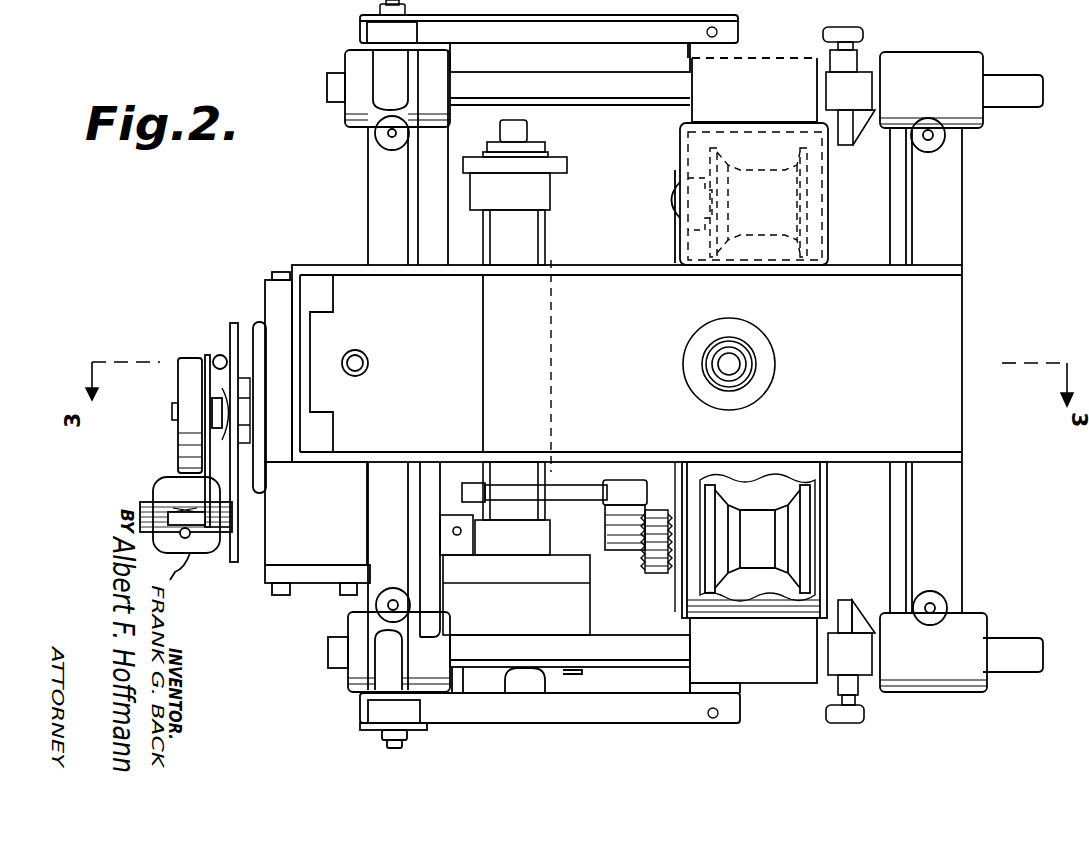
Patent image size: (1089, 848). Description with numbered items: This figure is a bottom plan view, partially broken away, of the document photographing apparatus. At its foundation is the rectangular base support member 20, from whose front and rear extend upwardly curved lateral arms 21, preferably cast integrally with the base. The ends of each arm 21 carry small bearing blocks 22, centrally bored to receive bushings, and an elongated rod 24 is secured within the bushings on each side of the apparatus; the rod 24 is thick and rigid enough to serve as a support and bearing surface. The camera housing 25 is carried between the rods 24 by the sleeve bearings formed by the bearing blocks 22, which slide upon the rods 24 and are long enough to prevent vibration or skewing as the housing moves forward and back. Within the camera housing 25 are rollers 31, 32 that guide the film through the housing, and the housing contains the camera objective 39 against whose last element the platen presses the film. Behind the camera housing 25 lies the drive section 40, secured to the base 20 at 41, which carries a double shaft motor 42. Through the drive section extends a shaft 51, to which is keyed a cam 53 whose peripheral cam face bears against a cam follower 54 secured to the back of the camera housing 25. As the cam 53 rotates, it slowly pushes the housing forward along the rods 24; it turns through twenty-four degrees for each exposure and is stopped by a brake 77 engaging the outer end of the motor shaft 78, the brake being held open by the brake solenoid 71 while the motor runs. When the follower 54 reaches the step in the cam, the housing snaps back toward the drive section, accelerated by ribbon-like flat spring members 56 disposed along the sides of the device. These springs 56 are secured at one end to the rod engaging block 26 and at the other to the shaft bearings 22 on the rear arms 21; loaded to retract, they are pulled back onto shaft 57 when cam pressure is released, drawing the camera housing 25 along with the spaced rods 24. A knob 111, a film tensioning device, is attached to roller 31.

The base support member 20 is at (952, 298).
The lateral arms 21 is at (372, 200).
The bearing blocks 22 is at (975, 128).
The elongated rod 24 is at (1025, 76).
The camera housing 25 is at (830, 182).
The rod engaging block 26 is at (762, 102).
The roller 31 is at (800, 520).
The roller 32 is at (808, 228).
The camera objective 39 is at (757, 364).
The drive section 40 is at (258, 582).
The securing point of drive section 41 is at (360, 552).
The double shaft motor 42 is at (262, 325).
The shaft 51 is at (528, 131).
The cam 53 is at (565, 496).
The cam follower 54 is at (612, 482).
The flat spring members 56 is at (572, 42).
The shaft 57 is at (392, 8).
The brake solenoid 71 is at (155, 505).
The brake 77 is at (169, 436).
The motor shaft 78 is at (173, 408).
The knob 111 is at (660, 574).